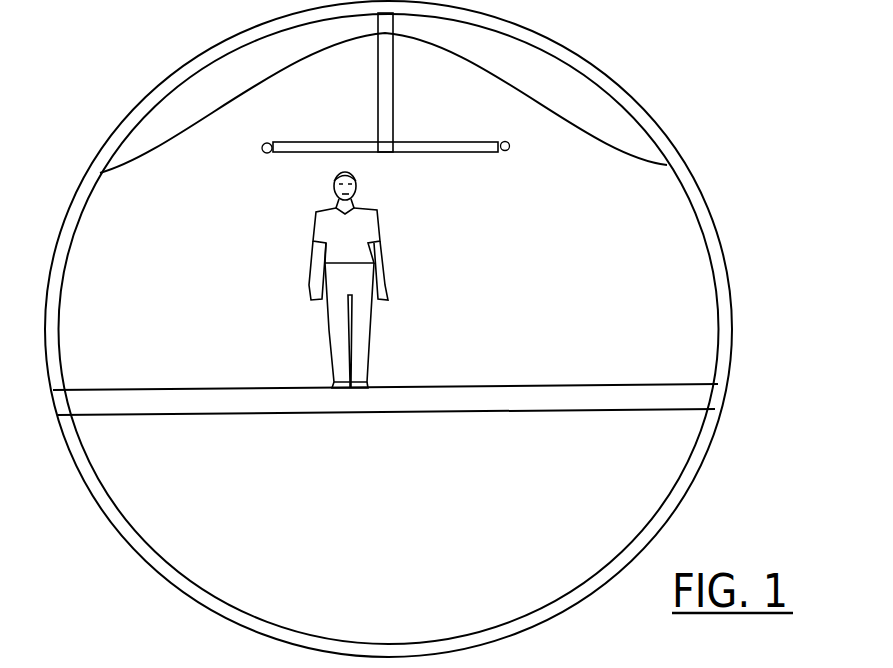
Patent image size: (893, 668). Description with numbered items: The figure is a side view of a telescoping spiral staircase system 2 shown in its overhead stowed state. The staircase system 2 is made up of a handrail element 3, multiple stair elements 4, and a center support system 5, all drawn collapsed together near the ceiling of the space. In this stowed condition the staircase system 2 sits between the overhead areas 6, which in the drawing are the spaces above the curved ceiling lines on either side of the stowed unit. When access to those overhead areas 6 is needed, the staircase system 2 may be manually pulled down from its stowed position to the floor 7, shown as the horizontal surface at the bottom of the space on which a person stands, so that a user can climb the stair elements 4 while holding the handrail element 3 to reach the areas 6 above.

The telescoping spiral staircase system 2 is at (396, 108).
The handrail element 3 is at (508, 150).
The stair elements 4 is at (368, 152).
The center support system 5 is at (393, 100).
The overhead areas 6 is at (173, 112).
The floor 7 is at (490, 387).